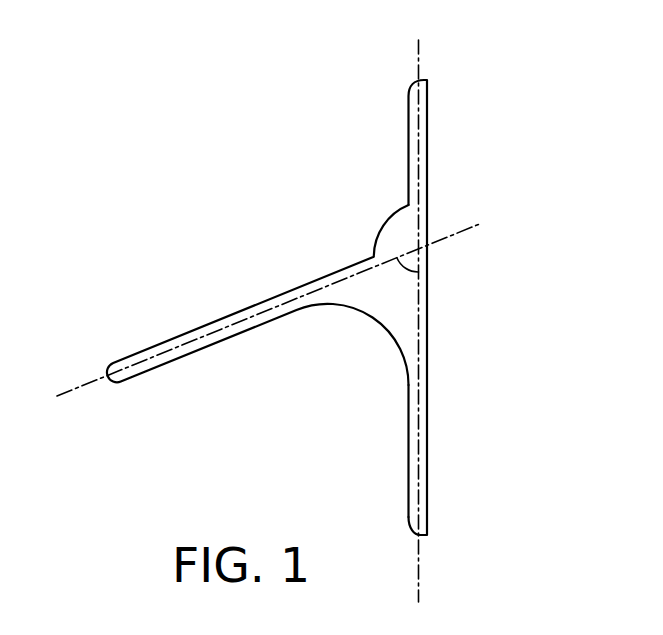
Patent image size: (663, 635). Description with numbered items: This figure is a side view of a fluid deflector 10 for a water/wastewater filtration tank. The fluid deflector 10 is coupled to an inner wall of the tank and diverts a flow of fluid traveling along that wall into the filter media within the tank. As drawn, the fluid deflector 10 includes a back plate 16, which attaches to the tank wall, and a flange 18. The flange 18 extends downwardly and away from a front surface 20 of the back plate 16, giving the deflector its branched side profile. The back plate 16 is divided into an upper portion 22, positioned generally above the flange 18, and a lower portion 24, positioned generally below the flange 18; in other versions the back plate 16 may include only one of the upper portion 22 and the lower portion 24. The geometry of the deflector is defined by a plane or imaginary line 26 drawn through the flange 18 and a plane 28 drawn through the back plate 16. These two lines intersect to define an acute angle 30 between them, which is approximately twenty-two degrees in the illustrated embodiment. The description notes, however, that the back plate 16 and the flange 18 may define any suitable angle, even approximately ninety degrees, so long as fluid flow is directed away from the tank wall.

The fluid deflector 10 is at (516, 90).
The back plate 16 is at (428, 433).
The flange 18 is at (189, 333).
The front surface 20 is at (407, 419).
The upper portion 22 is at (423, 137).
The lower portion 24 is at (420, 500).
The plane or imaginary line 26 is at (83, 393).
The plane 28 is at (417, 572).
The acute angle 30 is at (403, 270).